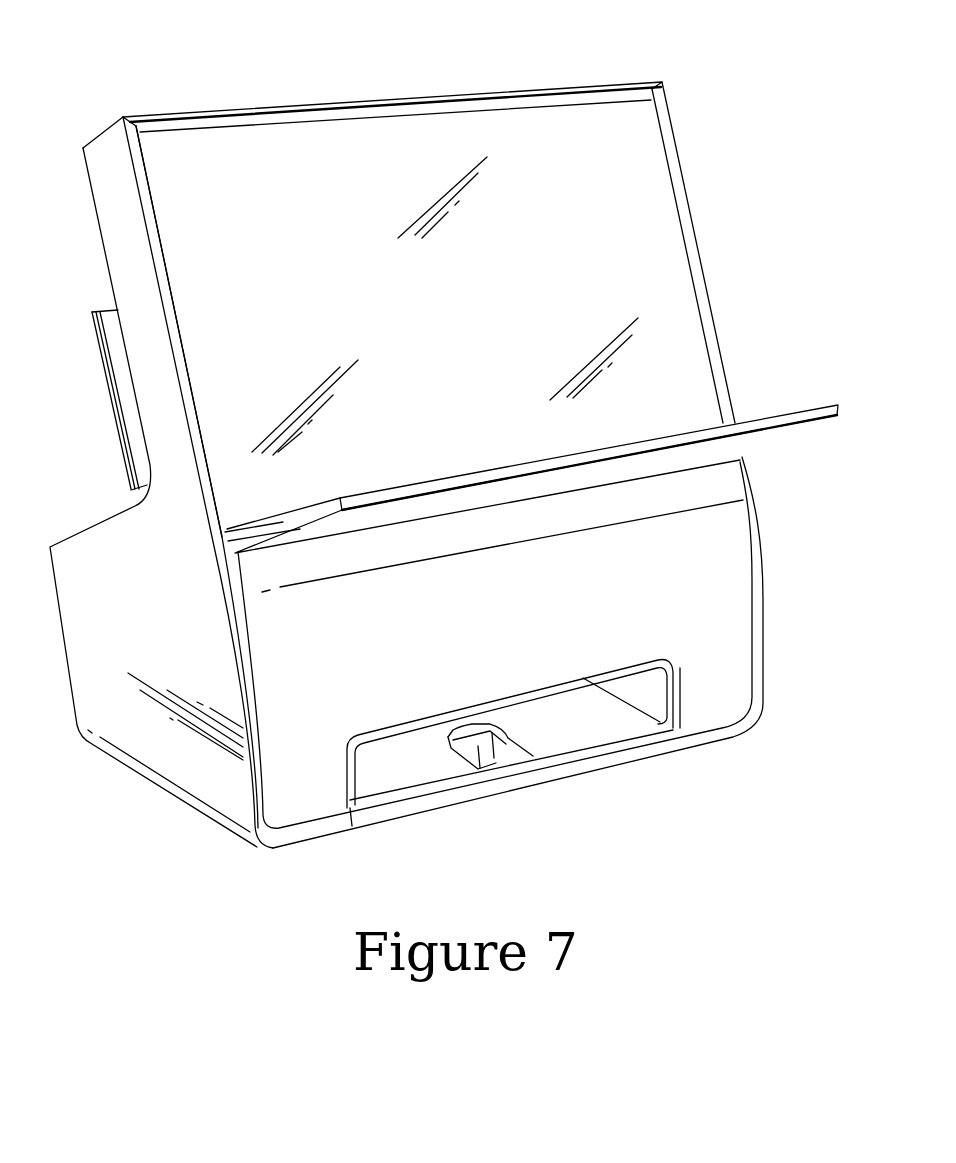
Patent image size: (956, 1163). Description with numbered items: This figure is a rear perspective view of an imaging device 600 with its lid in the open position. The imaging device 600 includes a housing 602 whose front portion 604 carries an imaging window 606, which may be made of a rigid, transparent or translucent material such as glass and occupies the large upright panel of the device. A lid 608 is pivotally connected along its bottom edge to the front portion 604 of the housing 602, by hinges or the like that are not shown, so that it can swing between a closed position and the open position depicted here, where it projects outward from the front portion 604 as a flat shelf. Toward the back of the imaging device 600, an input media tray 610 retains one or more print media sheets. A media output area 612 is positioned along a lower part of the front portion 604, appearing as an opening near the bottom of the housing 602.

The imaging device 600 is at (744, 118).
The housing 602 is at (73, 538).
The front portion 604 is at (727, 568).
The imaging window 606 is at (682, 307).
The lid 608 is at (768, 417).
The input media tray 610 is at (110, 390).
The media output area 612 is at (678, 668).